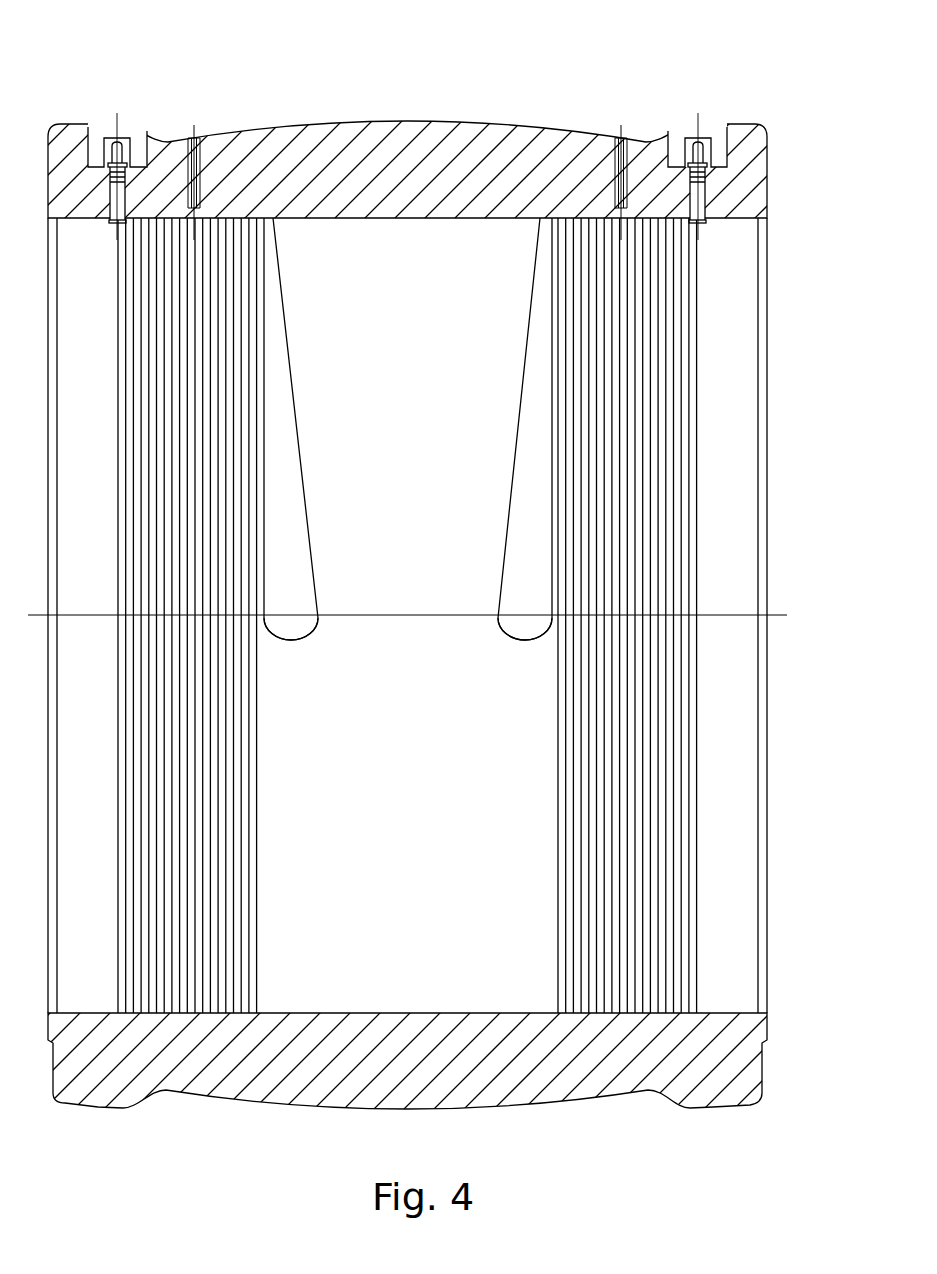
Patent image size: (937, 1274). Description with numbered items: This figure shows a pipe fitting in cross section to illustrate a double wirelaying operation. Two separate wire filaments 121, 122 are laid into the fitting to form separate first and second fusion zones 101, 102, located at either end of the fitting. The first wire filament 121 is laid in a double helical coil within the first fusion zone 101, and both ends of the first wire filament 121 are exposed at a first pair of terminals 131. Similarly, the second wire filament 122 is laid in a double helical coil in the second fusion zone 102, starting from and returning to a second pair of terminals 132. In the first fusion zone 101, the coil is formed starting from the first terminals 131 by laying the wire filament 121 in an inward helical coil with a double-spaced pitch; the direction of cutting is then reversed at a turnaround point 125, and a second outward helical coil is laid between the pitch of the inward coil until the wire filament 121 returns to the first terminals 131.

The first fusion zone 101 is at (198, 953).
The second fusion zone 102 is at (602, 905).
The first wire filament 121 is at (303, 457).
The second wire filament 122 is at (523, 387).
The turnaround point 125 is at (506, 640).
The first pair of terminals 131 is at (130, 127).
The second pair of terminals 132 is at (710, 130).